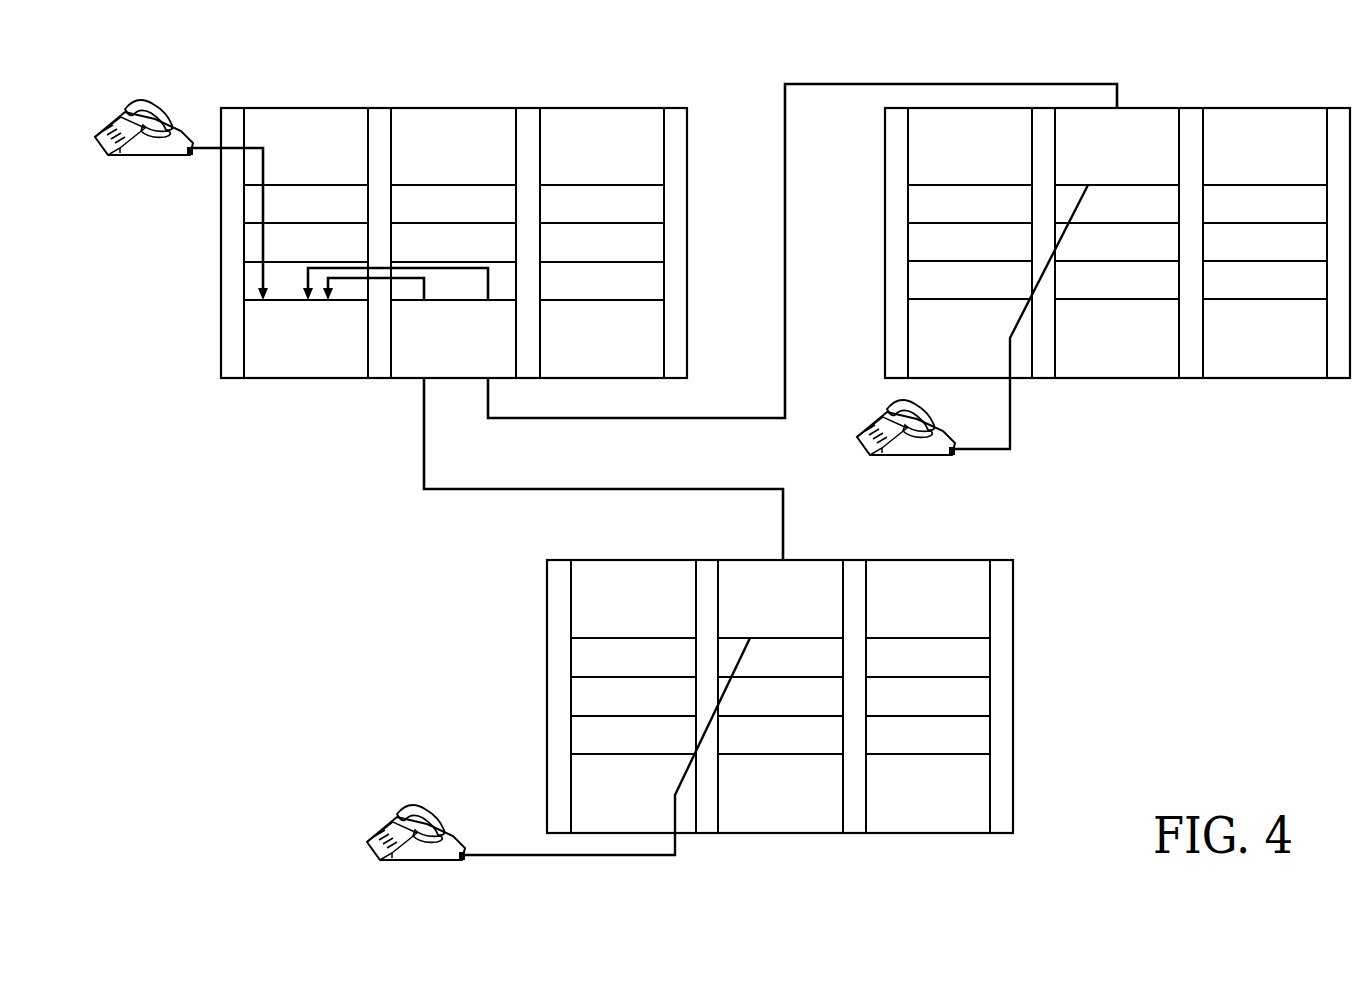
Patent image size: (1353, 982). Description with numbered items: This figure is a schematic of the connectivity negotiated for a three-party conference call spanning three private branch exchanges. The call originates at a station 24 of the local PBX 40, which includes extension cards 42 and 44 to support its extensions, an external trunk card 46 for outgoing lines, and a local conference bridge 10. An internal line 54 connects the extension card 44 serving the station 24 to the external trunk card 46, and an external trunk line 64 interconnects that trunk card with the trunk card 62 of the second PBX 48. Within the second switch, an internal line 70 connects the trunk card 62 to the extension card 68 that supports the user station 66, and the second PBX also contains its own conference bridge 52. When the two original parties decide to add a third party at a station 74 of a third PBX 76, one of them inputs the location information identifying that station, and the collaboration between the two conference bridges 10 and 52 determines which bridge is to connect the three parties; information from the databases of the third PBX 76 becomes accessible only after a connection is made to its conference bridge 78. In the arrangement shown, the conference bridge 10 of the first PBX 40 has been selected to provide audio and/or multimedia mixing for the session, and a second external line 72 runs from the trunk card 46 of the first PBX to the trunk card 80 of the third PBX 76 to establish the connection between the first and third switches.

The local conference bridge 10 is at (263, 330).
The station 24 is at (147, 152).
The local PBX 40 is at (630, 60).
The extension card 42 is at (448, 118).
The extension card 44 is at (316, 118).
The external trunk card 46 is at (402, 373).
The second PBX 48 is at (942, 64).
The conference bridge 52 is at (917, 135).
The internal line 54 is at (263, 237).
The trunk card 62 is at (1150, 115).
The external trunk line 64 is at (657, 421).
The station 66 is at (905, 452).
The extension card 68 is at (918, 313).
The internal line 70 is at (1050, 255).
The second external line 72 is at (550, 488).
The station 74 is at (365, 840).
The third PBX 76 is at (1057, 583).
The conference bridge 78 is at (583, 588).
The trunk card 80 is at (815, 565).